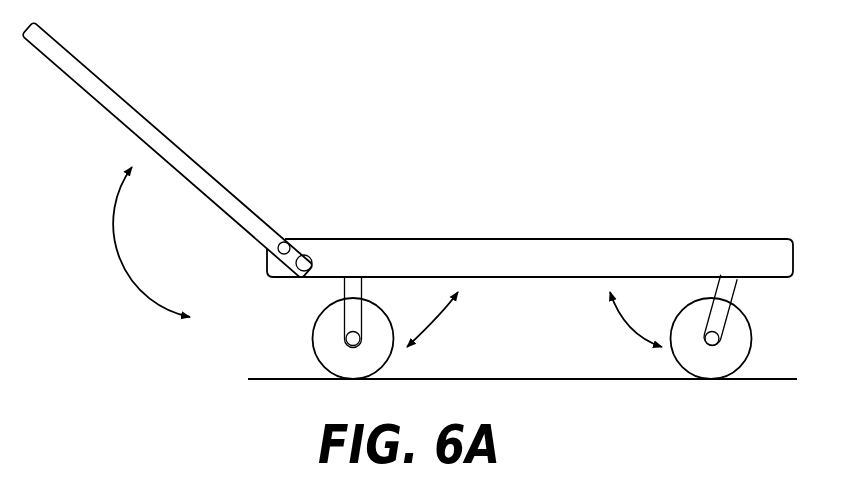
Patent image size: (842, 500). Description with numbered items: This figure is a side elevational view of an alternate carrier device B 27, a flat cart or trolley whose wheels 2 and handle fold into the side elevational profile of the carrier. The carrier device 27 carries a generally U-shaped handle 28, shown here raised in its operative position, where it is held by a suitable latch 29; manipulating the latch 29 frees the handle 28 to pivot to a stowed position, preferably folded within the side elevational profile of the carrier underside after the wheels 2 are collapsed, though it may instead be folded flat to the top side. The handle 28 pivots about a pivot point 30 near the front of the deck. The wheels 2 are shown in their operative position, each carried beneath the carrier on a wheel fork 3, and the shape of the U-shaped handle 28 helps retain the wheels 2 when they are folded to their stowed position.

The wheel 2 is at (313, 341).
The wheel fork 3 is at (345, 288).
The alternate carrier device B 27 is at (556, 278).
The U-shaped handle 28 is at (164, 133).
The latch 29 is at (283, 241).
The pivot 30 is at (320, 254).